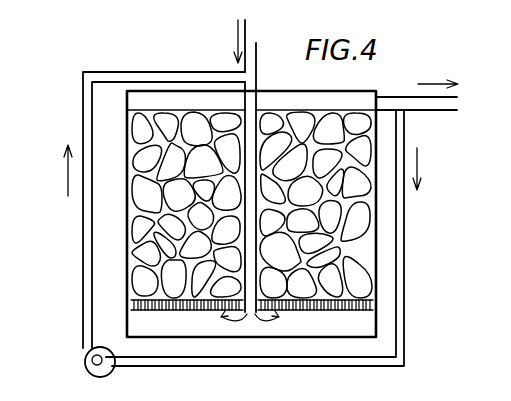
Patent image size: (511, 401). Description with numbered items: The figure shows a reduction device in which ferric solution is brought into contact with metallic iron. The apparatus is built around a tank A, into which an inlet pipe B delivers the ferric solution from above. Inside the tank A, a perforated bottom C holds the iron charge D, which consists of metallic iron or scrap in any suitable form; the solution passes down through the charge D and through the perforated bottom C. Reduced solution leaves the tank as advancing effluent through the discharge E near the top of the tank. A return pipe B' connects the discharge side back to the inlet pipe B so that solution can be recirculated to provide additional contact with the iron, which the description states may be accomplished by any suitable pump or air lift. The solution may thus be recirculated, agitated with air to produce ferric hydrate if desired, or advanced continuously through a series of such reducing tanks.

The tank A is at (128, 117).
The inlet pipe B is at (258, 166).
The recirculation pipe B' is at (260, 206).
The perforated bottom C is at (130, 306).
The iron charge D is at (128, 207).
The discharge E is at (449, 99).